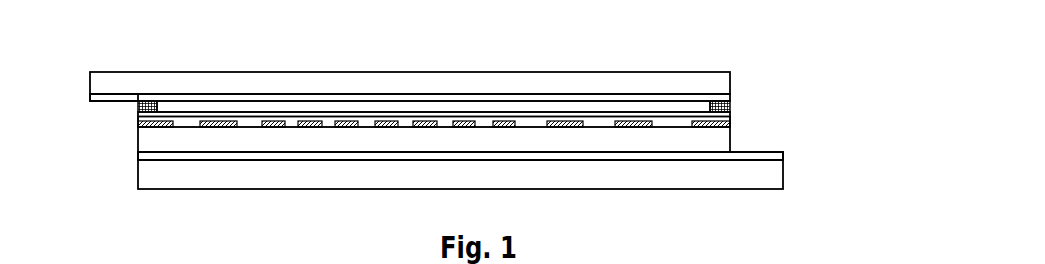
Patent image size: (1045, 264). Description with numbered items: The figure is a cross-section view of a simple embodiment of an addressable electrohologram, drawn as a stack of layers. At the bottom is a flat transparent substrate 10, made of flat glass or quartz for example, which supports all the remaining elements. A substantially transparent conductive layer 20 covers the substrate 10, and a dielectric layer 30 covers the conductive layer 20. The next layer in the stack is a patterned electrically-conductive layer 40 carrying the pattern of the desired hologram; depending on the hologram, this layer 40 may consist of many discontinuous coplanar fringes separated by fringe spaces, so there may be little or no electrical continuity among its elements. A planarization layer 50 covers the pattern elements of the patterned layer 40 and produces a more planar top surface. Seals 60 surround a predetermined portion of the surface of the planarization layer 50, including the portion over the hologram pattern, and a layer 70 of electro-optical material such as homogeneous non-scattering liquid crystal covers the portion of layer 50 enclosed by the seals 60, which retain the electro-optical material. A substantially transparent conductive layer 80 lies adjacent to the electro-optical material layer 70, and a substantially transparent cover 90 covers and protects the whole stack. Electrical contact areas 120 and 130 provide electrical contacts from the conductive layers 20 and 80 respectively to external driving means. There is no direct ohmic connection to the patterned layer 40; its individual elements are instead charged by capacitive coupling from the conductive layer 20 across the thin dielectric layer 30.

The flat transparent substrate 10 is at (692, 178).
The substantially transparent conductive layer 20 is at (617, 158).
The dielectric layer 30 is at (708, 138).
The patterned electrically-conductive layer 40 is at (730, 123).
The planarization layer 50 is at (197, 120).
The seals 60 is at (730, 113).
The electro-optical material layer 70 is at (195, 105).
The substantially transparent conductive layer 80 is at (730, 101).
The substantially transparent cover 90 is at (684, 83).
The electrical contact area 120 is at (760, 151).
The electrical contact area 130 is at (103, 101).